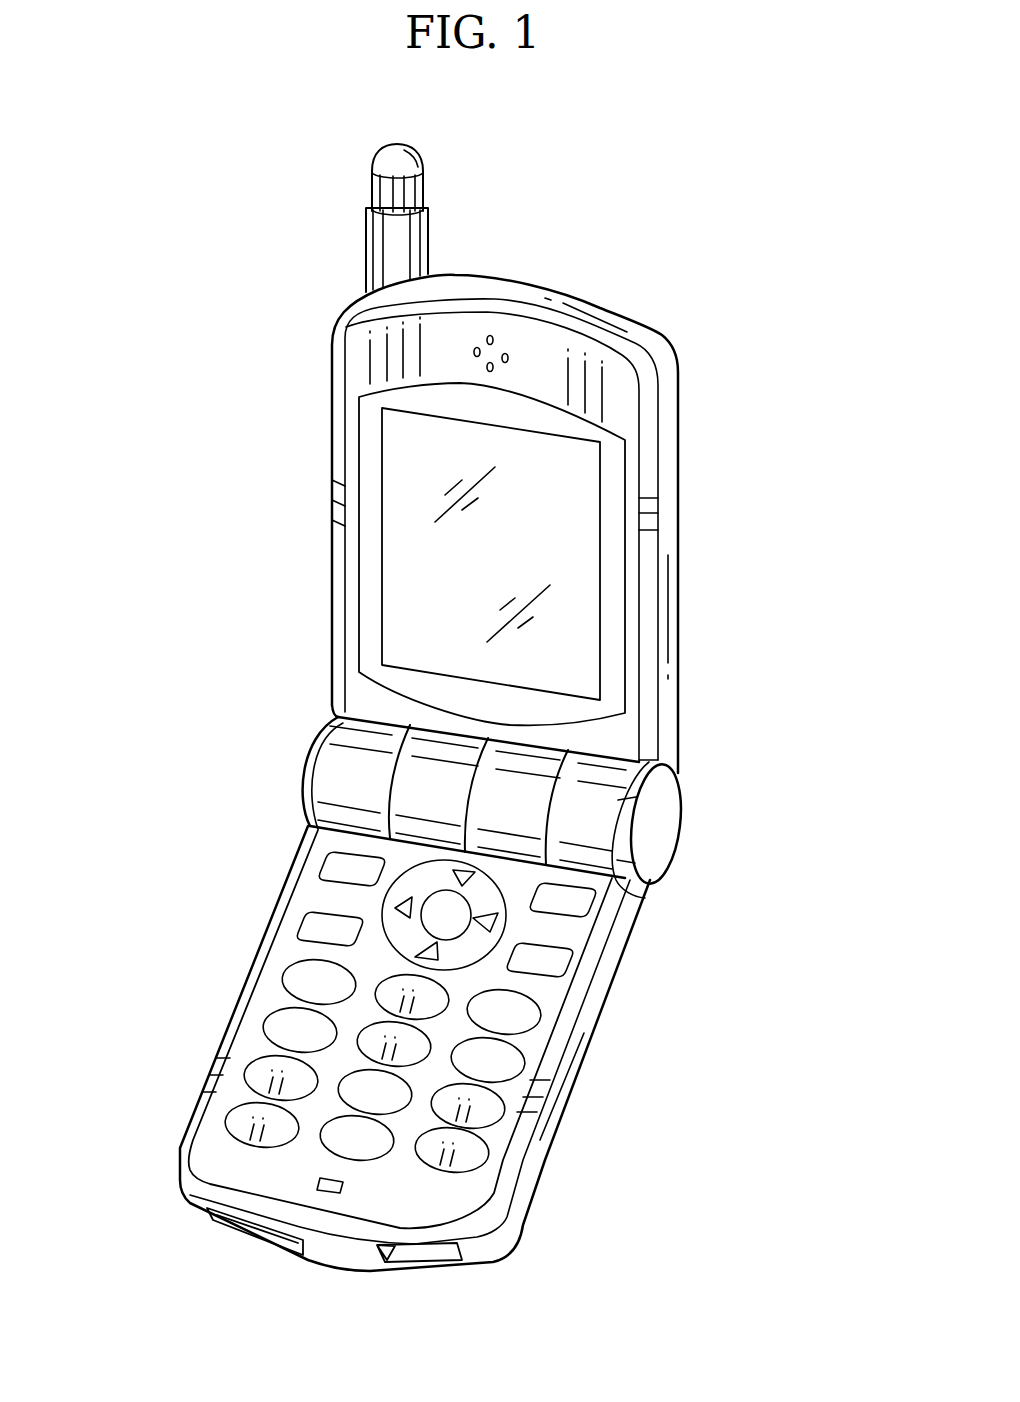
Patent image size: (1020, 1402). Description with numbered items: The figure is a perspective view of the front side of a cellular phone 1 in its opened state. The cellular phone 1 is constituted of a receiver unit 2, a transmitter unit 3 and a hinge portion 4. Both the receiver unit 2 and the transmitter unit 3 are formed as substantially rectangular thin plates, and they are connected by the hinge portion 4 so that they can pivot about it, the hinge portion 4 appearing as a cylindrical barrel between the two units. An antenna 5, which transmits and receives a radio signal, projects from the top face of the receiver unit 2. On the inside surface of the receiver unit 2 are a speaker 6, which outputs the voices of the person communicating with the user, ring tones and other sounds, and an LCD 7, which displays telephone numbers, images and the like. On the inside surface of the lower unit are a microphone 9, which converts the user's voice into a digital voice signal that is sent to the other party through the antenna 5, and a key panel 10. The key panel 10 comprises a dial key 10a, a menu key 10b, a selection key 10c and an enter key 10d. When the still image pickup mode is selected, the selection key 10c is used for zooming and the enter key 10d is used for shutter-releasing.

The cellular phone 1 is at (698, 307).
The receiver unit 2 is at (677, 576).
The transmitter unit 3 is at (552, 1137).
The hinge portion 4 is at (672, 812).
The antenna 5 is at (385, 192).
The speaker 6 is at (492, 336).
The LCD 7 is at (393, 557).
The microphone 9 is at (322, 1192).
The key panel 10 is at (425, 997).
The dial key 10a is at (527, 1008).
The menu key 10b is at (337, 862).
The selection key 10c is at (397, 935).
The enter key 10d is at (452, 912).